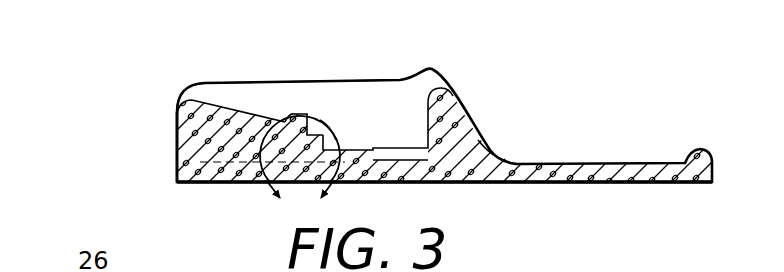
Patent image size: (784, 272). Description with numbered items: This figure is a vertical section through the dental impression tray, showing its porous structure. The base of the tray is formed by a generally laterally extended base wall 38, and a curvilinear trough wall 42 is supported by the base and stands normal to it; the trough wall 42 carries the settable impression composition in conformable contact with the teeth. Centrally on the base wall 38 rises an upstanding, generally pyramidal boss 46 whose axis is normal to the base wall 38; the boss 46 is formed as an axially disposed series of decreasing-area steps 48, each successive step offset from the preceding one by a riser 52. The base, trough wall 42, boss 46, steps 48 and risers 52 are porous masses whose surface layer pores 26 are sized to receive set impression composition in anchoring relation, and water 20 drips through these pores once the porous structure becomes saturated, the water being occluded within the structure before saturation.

The water 20 is at (447, 110).
The pores 26 is at (177, 125).
The base wall 38 is at (264, 189).
The trough wall 42 is at (377, 107).
The boss 46 is at (240, 130).
The steps 48 is at (343, 165).
The riser 52 is at (290, 116).